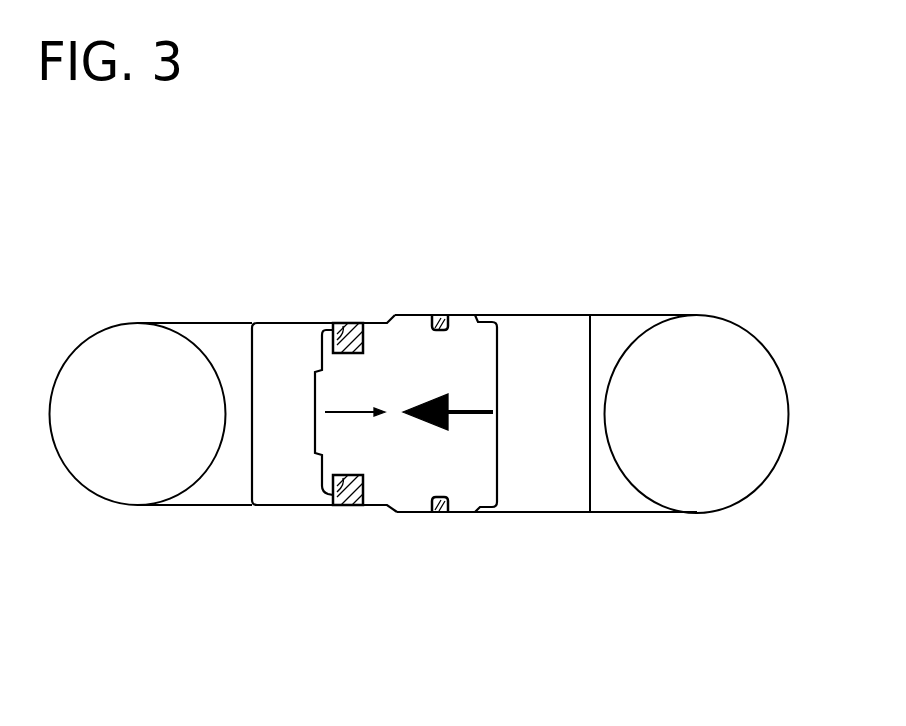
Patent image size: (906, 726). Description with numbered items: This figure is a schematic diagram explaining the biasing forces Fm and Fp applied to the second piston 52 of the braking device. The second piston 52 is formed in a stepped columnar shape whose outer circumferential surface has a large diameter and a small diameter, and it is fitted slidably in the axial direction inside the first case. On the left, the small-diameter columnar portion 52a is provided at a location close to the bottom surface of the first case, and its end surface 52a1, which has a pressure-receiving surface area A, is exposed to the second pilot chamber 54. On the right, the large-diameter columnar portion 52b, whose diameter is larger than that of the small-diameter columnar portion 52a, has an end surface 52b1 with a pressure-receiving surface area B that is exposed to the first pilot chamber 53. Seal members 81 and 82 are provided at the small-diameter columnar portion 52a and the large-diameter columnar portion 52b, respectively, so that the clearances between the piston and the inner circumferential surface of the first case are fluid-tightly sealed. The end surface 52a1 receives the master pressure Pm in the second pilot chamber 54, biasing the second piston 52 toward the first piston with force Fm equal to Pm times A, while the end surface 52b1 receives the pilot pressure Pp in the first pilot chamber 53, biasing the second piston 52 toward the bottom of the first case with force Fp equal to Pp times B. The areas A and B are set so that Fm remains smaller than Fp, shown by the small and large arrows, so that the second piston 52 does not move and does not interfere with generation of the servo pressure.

The second piston 52 is at (406, 446).
The small-diameter columnar portion 52a is at (382, 340).
The large-diameter columnar portion 52b is at (468, 345).
The end surface 52a1 is at (140, 342).
The end surface 52b1 is at (685, 343).
The first pilot chamber 53 is at (532, 340).
The second pilot chamber 54 is at (283, 357).
The seal member 81 is at (345, 505).
The seal member 82 is at (439, 512).